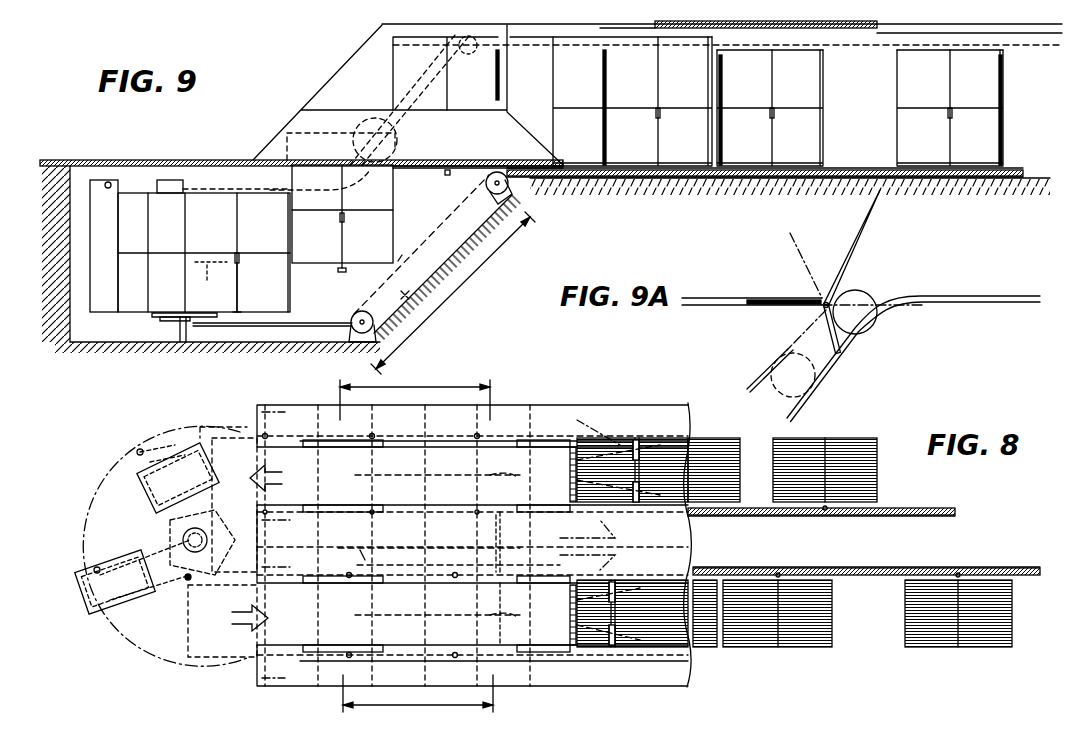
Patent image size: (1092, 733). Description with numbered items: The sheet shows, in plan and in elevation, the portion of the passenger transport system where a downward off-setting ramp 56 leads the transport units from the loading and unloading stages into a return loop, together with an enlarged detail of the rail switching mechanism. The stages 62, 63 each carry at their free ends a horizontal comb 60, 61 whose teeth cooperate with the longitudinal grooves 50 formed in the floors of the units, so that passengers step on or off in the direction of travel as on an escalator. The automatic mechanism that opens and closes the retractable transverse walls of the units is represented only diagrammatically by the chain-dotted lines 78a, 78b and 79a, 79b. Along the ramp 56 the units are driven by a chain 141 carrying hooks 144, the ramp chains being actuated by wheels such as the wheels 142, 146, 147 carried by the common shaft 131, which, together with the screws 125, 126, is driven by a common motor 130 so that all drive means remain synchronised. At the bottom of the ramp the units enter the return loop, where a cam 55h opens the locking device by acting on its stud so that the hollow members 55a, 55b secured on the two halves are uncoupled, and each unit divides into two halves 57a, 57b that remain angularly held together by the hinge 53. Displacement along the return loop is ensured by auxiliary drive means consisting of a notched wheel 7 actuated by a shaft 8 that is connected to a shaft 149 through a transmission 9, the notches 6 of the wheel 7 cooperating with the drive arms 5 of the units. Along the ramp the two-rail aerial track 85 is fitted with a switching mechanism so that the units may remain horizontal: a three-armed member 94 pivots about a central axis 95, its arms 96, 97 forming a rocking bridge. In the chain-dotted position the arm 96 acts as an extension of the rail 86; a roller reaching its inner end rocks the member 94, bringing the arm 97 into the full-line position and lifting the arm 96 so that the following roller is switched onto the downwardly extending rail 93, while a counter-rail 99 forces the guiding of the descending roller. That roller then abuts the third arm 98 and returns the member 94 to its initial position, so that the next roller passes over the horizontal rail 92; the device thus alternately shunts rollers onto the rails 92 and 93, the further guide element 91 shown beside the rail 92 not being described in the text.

In FIG. 9, the drive arms 5 is at (150, 315).
In FIG. 8, the notches 6 is at (257, 557).
In FIG. 9, the notched wheel 7 is at (161, 330).
In FIG. 8, the notched wheel 7 is at (191, 581).
In FIG. 9, the shaft 8 is at (315, 323).
In FIG. 8, the shaft 8 is at (338, 546).
In FIG. 8, the transmission 9 is at (362, 547).
In FIG. 8, the longitudinal grooves 50 is at (598, 448).
In FIG. 8, the hinge 53 is at (158, 531).
In FIG. 8, the hollow member 55a is at (93, 572).
In FIG. 8, the hollow member 55b is at (137, 455).
In FIG. 9, the cam 55h is at (215, 280).
In FIG. 8, the cam 55h is at (205, 430).
In FIG. 9, the downward off-setting ramp 56 is at (453, 284).
In FIG. 8, the downward off-setting ramp 56 is at (416, 535).
In FIG. 8, the unit half 57a is at (108, 598).
In FIG. 8, the unit half 57b is at (165, 447).
In FIG. 9, the horizontal comb 60 is at (556, 164).
In FIG. 8, the horizontal comb 60 is at (575, 628).
In FIG. 8, the horizontal comb 61 is at (575, 476).
In FIG. 9, the stage 62 is at (472, 158).
In FIG. 8, the stage 62 is at (375, 640).
In FIG. 8, the stage 63 is at (363, 460).
In FIG. 8, the chain-dotted line 78a is at (636, 406).
In FIG. 8, the chain-dotted line 78b is at (617, 540).
In FIG. 8, the chain-dotted line 79a is at (247, 420).
In FIG. 8, the chain-dotted line 79b is at (257, 505).
In FIG. 9A, the two-rail aerial track 85 is at (862, 300).
In FIG. 9, the rail 86 is at (528, 48).
In FIG. 9A, the rail 86 is at (982, 296).
In FIG. 9, the guide 91 is at (493, 48).
In FIG. 9, the horizontal rail 92 is at (393, 52).
In FIG. 9A, the horizontal rail 92 is at (692, 296).
In FIG. 9, the inclined rail 93 is at (404, 127).
In FIG. 9A, the inclined rail 93 is at (826, 380).
In FIG. 9A, the three-armed member 94 is at (862, 272).
In FIG. 9A, the axis 95 is at (818, 307).
In FIG. 9A, the arm 96 is at (858, 246).
In FIG. 9A, the arm 97 is at (767, 298).
In FIG. 9A, the third arm 98 is at (844, 351).
In FIG. 9, the counter-rail 99 is at (392, 118).
In FIG. 9A, the counter-rail 99 is at (750, 386).
In FIG. 9, the screw 125 is at (697, 178).
In FIG. 8, the screw 125 is at (867, 578).
In FIG. 8, the screw 126 is at (918, 507).
In FIG. 8, the common motor 130 is at (483, 660).
In FIG. 8, the common shaft 131 is at (475, 543).
In FIG. 9, the chain 141 is at (447, 215).
In FIG. 8, the chain 141 is at (450, 612).
In FIG. 8, the switch 142 is at (418, 472).
In FIG. 9, the hooks 144 is at (400, 260).
In FIG. 8, the wheel 146 is at (510, 612).
In FIG. 8, the wheel 147 is at (504, 463).
In FIG. 8, the shaft 149 is at (358, 565).